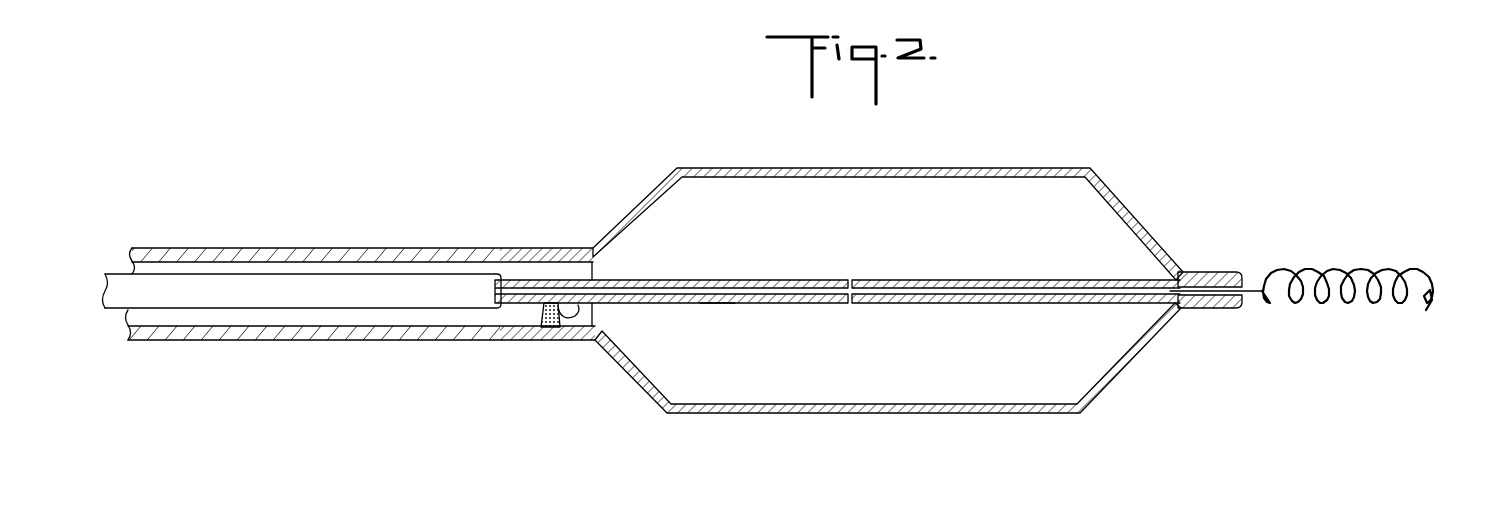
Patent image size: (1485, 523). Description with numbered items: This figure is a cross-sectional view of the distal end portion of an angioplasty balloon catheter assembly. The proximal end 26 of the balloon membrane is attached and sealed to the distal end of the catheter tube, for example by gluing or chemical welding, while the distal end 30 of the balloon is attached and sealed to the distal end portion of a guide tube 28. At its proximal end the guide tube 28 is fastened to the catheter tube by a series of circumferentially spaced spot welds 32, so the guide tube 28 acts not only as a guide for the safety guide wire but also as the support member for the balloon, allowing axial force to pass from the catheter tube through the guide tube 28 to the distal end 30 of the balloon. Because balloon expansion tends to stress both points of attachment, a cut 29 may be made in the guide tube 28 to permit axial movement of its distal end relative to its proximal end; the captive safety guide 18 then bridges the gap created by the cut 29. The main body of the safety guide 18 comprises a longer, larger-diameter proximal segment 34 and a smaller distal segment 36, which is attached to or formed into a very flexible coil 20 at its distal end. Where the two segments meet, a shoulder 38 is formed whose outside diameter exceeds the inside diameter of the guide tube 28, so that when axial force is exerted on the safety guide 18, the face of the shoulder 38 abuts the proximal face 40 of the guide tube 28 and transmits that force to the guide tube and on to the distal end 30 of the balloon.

The captive safety guide 18 is at (852, 280).
The coil spring 20 is at (1370, 270).
The proximal end of balloon membrane 26 is at (545, 248).
The guide tube 28 is at (965, 280).
The cut 29 is at (849, 305).
The distal end of balloon 30 is at (1185, 272).
The spot welds 32 is at (581, 338).
The proximal segment 34 is at (299, 277).
The distal segment 36 is at (716, 305).
The shoulder 38 is at (497, 312).
The proximal face of guide tube 40 is at (505, 280).